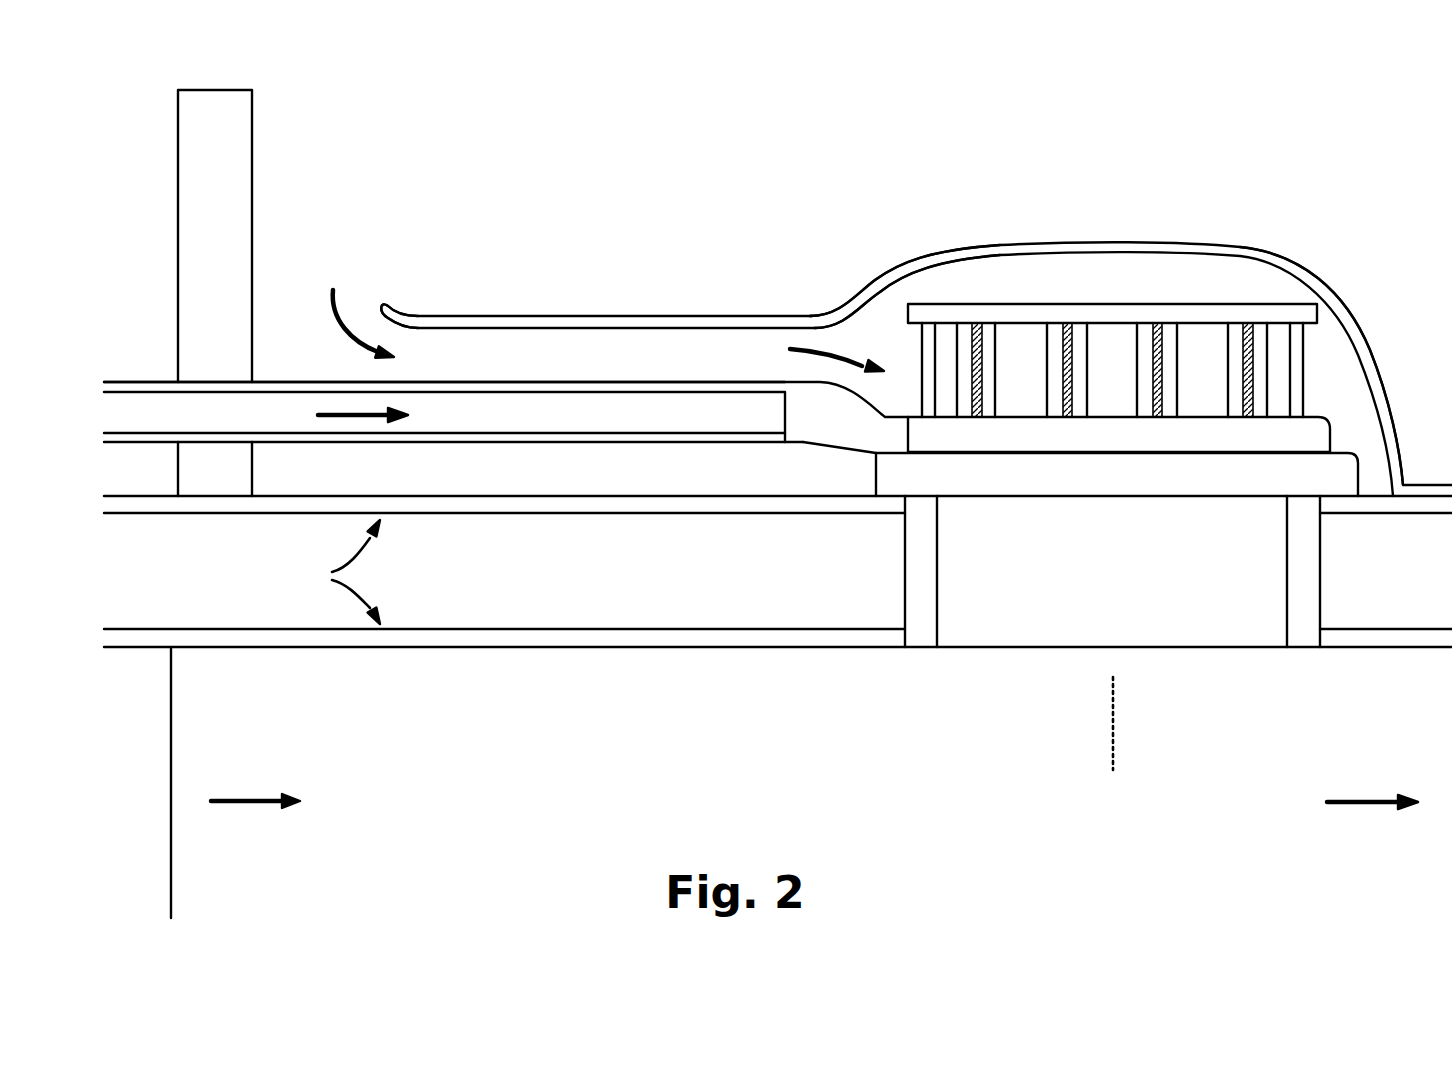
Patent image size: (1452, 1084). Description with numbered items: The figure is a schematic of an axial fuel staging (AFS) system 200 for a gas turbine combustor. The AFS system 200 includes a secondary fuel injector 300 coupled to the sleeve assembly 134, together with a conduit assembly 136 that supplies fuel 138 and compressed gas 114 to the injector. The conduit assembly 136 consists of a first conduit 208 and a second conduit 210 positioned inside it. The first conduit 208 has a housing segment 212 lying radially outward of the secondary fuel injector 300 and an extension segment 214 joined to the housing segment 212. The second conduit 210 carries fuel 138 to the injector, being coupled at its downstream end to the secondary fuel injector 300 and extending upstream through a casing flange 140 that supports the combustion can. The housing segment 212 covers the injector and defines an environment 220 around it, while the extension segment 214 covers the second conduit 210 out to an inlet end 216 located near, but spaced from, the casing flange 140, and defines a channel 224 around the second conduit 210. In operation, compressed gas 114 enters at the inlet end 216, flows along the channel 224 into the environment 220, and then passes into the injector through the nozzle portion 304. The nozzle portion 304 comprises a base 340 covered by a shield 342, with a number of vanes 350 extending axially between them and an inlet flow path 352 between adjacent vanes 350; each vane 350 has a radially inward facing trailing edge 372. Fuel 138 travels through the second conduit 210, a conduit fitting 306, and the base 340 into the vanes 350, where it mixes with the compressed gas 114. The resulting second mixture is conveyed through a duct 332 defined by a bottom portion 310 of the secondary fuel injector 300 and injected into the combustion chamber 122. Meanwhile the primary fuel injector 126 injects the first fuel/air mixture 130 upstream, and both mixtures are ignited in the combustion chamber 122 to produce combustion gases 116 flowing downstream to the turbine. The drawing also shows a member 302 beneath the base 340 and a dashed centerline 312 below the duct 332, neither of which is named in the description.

The AFS system 200 is at (1300, 157).
The casing flange 140 is at (252, 160).
The compressed gas 114 is at (330, 313).
The inlet end 216 is at (400, 310).
The first conduit 208 is at (514, 296).
The conduit assembly 136 is at (608, 285).
The extension segment 214 is at (687, 316).
The channel 224 is at (590, 362).
The fuel 138 is at (322, 414).
The second conduit 210 is at (455, 443).
The sleeve assembly 134 is at (331, 572).
The conduit fitting 306 is at (810, 425).
The secondary fuel injector 300 is at (896, 282).
The housing segment 212 is at (1112, 242).
The nozzle portion 304 is at (1340, 348).
The shield 342 is at (955, 318).
The base 340 is at (1318, 430).
The base 302 is at (893, 492).
The vanes 350 is at (945, 375).
The inlet flow path 352 is at (986, 407).
The trailing edge 372 is at (1062, 348).
The environment 220 is at (1078, 286).
The bottom portion 310 is at (905, 596).
The duct 332 is at (1089, 579).
The axis 312 is at (1120, 707).
The first fuel/air mixture 130 is at (244, 800).
The combustion gases 116 is at (1355, 802).
The primary fuel injector 126 is at (98, 802).
The combustion chamber 122 is at (775, 813).